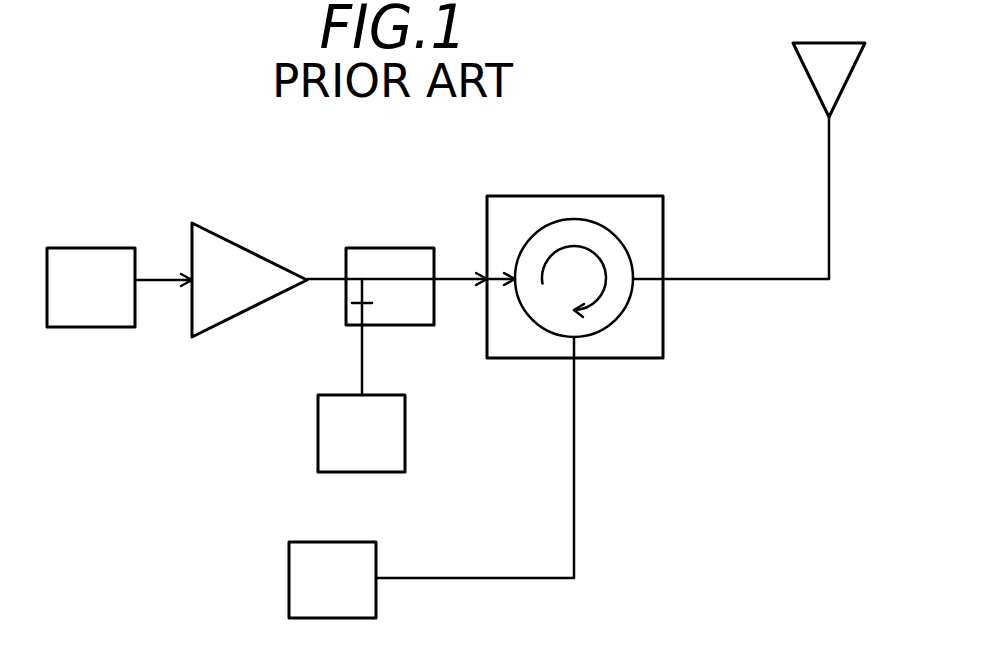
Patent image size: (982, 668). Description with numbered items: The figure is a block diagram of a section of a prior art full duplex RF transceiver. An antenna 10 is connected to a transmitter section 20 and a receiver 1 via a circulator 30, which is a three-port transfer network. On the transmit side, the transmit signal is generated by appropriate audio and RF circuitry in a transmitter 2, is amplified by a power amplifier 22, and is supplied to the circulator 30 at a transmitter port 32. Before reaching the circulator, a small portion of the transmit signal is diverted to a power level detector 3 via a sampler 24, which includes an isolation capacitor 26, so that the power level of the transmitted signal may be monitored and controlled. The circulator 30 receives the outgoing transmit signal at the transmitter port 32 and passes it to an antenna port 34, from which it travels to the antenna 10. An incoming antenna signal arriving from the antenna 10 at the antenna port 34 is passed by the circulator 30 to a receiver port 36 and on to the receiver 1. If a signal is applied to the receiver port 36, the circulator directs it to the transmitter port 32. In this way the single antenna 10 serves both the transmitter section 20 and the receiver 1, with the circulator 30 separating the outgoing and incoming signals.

The receiver 1 is at (343, 541).
The transmitter 2 is at (88, 247).
The power level detector 3 is at (348, 394).
The antenna 10 is at (815, 92).
The transmitter section 20 is at (330, 243).
The power amplifier 22 is at (214, 234).
The sampler 24 is at (370, 247).
The isolation capacitor 26 is at (355, 309).
The circulator 30 is at (487, 200).
The transmitter port 32 is at (483, 283).
The antenna port 34 is at (668, 270).
The receiver port 36 is at (582, 363).